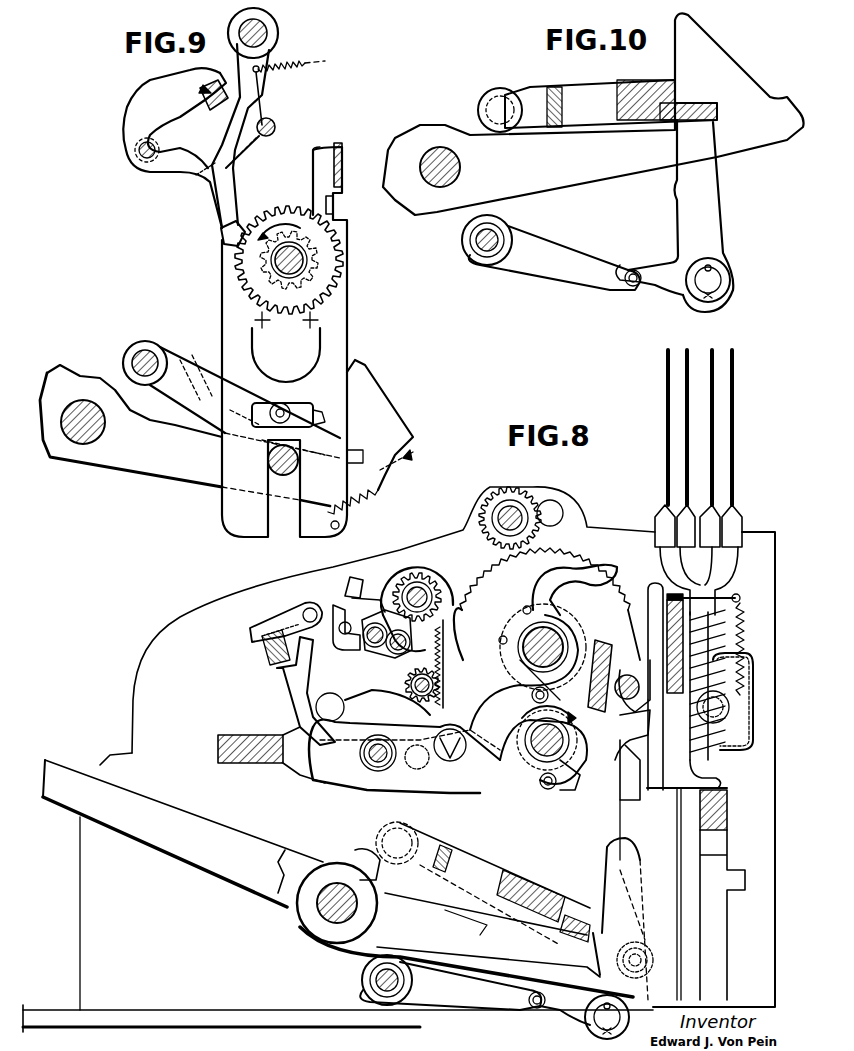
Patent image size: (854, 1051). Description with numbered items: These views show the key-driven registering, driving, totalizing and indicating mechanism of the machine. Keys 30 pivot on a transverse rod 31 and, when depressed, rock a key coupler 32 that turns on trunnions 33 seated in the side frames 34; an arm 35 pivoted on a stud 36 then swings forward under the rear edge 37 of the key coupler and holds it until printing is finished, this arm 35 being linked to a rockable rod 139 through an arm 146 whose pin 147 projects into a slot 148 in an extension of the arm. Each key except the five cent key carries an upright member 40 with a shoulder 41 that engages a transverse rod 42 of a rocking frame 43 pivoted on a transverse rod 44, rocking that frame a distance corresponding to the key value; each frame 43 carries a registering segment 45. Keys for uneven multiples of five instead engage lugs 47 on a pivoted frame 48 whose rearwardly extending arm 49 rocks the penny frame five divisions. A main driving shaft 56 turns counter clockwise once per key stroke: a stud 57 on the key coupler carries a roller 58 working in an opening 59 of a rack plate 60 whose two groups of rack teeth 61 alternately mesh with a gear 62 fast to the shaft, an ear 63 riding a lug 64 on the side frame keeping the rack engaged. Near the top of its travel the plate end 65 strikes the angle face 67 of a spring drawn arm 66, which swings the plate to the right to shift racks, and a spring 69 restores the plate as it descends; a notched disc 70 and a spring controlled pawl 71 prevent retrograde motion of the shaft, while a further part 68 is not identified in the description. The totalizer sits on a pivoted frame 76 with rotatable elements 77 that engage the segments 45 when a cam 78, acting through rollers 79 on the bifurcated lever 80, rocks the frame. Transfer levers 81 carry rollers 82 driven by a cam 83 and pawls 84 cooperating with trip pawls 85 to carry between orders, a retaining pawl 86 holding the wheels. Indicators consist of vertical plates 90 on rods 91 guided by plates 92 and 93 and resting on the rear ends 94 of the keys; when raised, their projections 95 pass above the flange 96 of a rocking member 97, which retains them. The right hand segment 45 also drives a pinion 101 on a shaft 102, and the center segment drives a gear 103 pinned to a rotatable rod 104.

In FIG. 9, the keys 30 is at (155, 475).
In FIG. 10, the keys 30 is at (752, 147).
In FIG. 8, the keys 30 is at (180, 858).
In FIG. 9, the transverse rod 31 is at (82, 405).
In FIG. 10, the transverse rod 31 is at (432, 150).
In FIG. 8, the transverse rod 31 is at (320, 928).
In FIG. 9, the key coupler 32 is at (207, 352).
In FIG. 10, the key coupler 32 is at (545, 86).
In FIG. 8, the key coupler 32 is at (522, 878).
In FIG. 9, the trunnions 33 is at (125, 356).
In FIG. 10, the trunnions 33 is at (490, 103).
In FIG. 8, the trunnions 33 is at (398, 845).
In FIG. 8, the side frames 34 is at (83, 916).
In FIG. 10, the arm 35 is at (712, 233).
In FIG. 8, the arm 35 is at (627, 848).
In FIG. 10, the stud 36 is at (720, 272).
In FIG. 8, the stud 36 is at (602, 1012).
In FIG. 10, the rear edge 37 is at (668, 126).
In FIG. 8, the rear edge 37 is at (575, 926).
In FIG. 8, the upright member 40 is at (640, 798).
In FIG. 8, the shoulder 41 is at (585, 722).
In FIG. 8, the transverse rod 42 is at (628, 674).
In FIG. 8, the rocking frame 43 is at (600, 650).
In FIG. 8, the transverse rod 44 is at (549, 638).
In FIG. 8, the registering segment 45 is at (585, 556).
In FIG. 8, the downwardly projecting lugs 47 is at (484, 906).
In FIG. 8, the pivoted frame 48 is at (366, 858).
In FIG. 8, the rearwardly extending arm 49 is at (297, 905).
In FIG. 9, the main driving shaft 56 is at (310, 268).
In FIG. 8, the main driving shaft 56 is at (568, 750).
In FIG. 9, the stud 57 is at (283, 405).
In FIG. 9, the roller 58 is at (272, 430).
In FIG. 9, the opening 59 is at (318, 414).
In FIG. 9, the rack plate 60 is at (335, 322).
In FIG. 9, the rack teeth 61 is at (305, 330).
In FIG. 9, the gear 62 is at (302, 287).
In FIG. 9, the ear 63 is at (334, 205).
In FIG. 9, the lug 64 is at (342, 148).
In FIG. 9, the end 65 is at (241, 225).
In FIG. 9, the spring drawn arm 66 is at (264, 88).
In FIG. 9, the angle face 67 is at (241, 150).
In FIG. 9, the stud 68 is at (298, 470).
In FIG. 9, the spring 69 is at (378, 488).
In FIG. 9, the notched disc 70 is at (236, 266).
In FIG. 9, the spring controlled pawl 71 is at (205, 192).
In FIG. 8, the pivoted frame 76 is at (348, 709).
In FIG. 8, the rotatable elements 77 is at (432, 574).
In FIG. 8, the cam 78 is at (530, 724).
In FIG. 8, the rollers 79 is at (533, 693).
In FIG. 8, the lever 80 is at (458, 790).
In FIG. 8, the transfer levers 81 is at (290, 687).
In FIG. 8, the roller 82 is at (508, 790).
In FIG. 8, the cam 83 is at (568, 793).
In FIG. 8, the pawl 84 is at (320, 600).
In FIG. 8, the trip pawl 85 is at (350, 585).
In FIG. 8, the retaining pawl 86 is at (382, 648).
In FIG. 8, the vertical plates 90 is at (667, 423).
In FIG. 8, the rods 91 is at (730, 560).
In FIG. 8, the plate 92 is at (731, 596).
In FIG. 8, the plate 93 is at (720, 786).
In FIG. 8, the rear ends 94 is at (710, 958).
In FIG. 8, the projections 95 is at (705, 745).
In FIG. 8, the flange 96 is at (743, 636).
In FIG. 8, the rocking member 97 is at (742, 682).
In FIG. 8, the pinion 101 is at (432, 705).
In FIG. 8, the shaft 102 is at (408, 685).
In FIG. 8, the gear 103 is at (535, 500).
In FIG. 8, the rotatable rod 104 is at (505, 508).
In FIG. 10, the rockable rod 139 is at (505, 230).
In FIG. 8, the rockable rod 139 is at (368, 970).
In FIG. 10, the arm 146 is at (541, 250).
In FIG. 8, the arm 146 is at (442, 1005).
In FIG. 10, the pin 147 is at (622, 284).
In FIG. 8, the pin 147 is at (530, 998).
In FIG. 10, the slot 148 is at (625, 265).